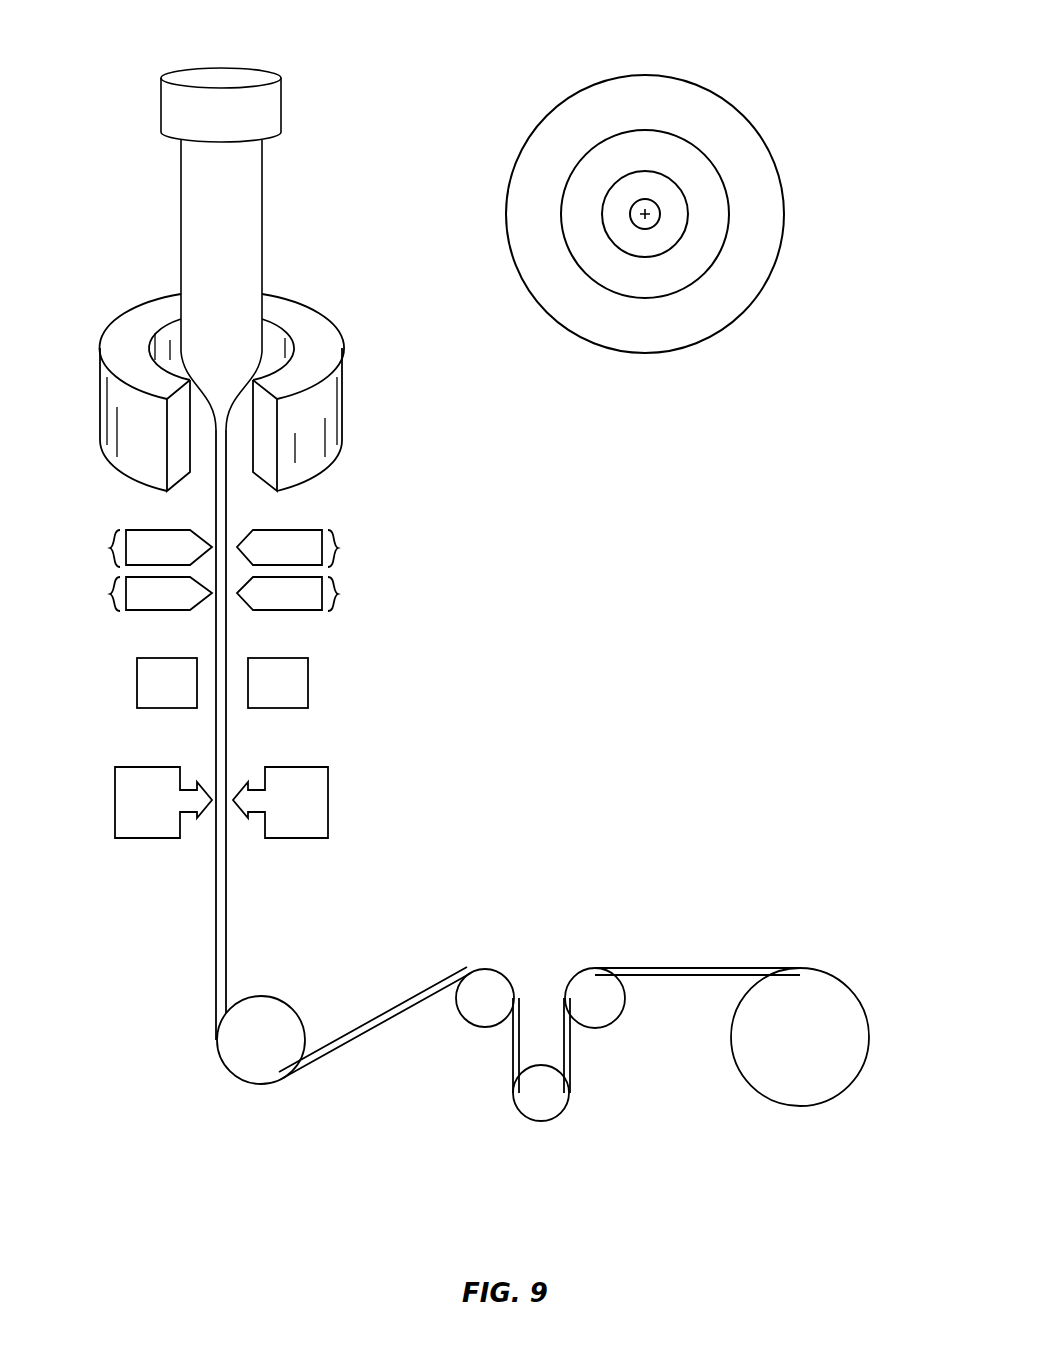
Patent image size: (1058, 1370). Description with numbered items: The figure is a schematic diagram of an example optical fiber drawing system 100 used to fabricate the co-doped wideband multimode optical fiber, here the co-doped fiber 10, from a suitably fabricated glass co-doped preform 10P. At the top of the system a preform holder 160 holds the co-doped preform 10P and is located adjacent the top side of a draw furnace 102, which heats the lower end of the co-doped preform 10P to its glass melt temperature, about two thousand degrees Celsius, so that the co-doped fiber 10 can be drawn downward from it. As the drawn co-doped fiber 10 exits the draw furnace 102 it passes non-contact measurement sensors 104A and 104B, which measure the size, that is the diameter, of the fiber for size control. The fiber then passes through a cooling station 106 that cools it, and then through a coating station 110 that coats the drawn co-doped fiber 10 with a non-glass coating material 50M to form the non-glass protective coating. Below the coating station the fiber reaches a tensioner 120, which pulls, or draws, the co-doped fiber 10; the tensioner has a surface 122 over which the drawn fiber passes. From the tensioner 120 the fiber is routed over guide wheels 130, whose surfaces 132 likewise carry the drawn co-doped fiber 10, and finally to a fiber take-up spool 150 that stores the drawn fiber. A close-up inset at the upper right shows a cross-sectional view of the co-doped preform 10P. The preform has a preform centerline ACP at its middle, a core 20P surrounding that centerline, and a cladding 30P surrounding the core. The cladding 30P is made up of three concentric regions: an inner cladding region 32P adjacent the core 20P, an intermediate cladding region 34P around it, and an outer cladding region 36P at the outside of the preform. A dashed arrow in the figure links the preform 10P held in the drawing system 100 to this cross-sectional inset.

The optical fiber drawing system 100 is at (86, 206).
The preform holder 160 is at (283, 108).
The co-doped preform 10P is at (482, 237).
The outer cladding region 36P is at (692, 103).
The intermediate cladding region 34P is at (661, 153).
The inner cladding region 32P is at (652, 190).
The cladding 30P is at (830, 53).
The core 20P is at (650, 205).
The preform centerline ACP is at (651, 222).
The draw furnace 102 is at (330, 410).
The non-contact measurement sensor 104A is at (263, 548).
The non-contact measurement sensor 104B is at (262, 593).
The cooling station 106 is at (310, 685).
The coating station 110 is at (330, 797).
The non-glass coating material 50M is at (245, 816).
The co-doped fiber 10 is at (214, 945).
The tensioner 120 is at (280, 1015).
The surface of the tensioner 122 is at (264, 997).
The guide wheels 130 is at (483, 1003).
The surfaces of the guide wheels 132 is at (475, 972).
The fiber take-up spool 150 is at (838, 1010).